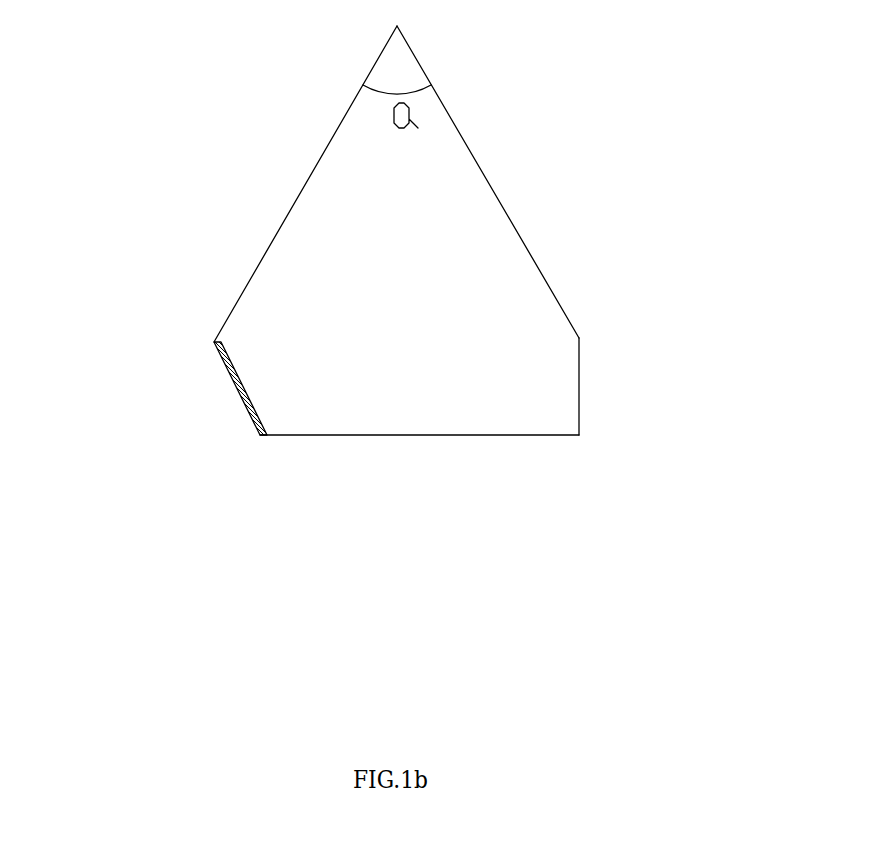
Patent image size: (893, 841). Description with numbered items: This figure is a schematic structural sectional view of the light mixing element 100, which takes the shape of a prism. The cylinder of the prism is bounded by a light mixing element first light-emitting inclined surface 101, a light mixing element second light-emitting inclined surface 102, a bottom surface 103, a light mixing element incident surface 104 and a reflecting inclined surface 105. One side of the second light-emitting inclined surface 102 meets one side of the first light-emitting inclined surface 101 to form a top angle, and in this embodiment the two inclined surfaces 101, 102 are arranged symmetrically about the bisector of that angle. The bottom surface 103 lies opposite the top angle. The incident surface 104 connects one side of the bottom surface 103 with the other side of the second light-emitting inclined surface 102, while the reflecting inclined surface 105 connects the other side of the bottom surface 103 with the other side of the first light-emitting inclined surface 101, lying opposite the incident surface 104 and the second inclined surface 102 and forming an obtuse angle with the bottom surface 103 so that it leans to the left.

The light mixing element 100 is at (385, 382).
The light mixing element first light-emitting inclined surface 101 is at (293, 207).
The light mixing element second light-emitting inclined surface 102 is at (503, 208).
The bottom surface 103 is at (373, 435).
The light mixing element incident surface 104 is at (579, 387).
The reflecting inclined surface 105 is at (238, 390).